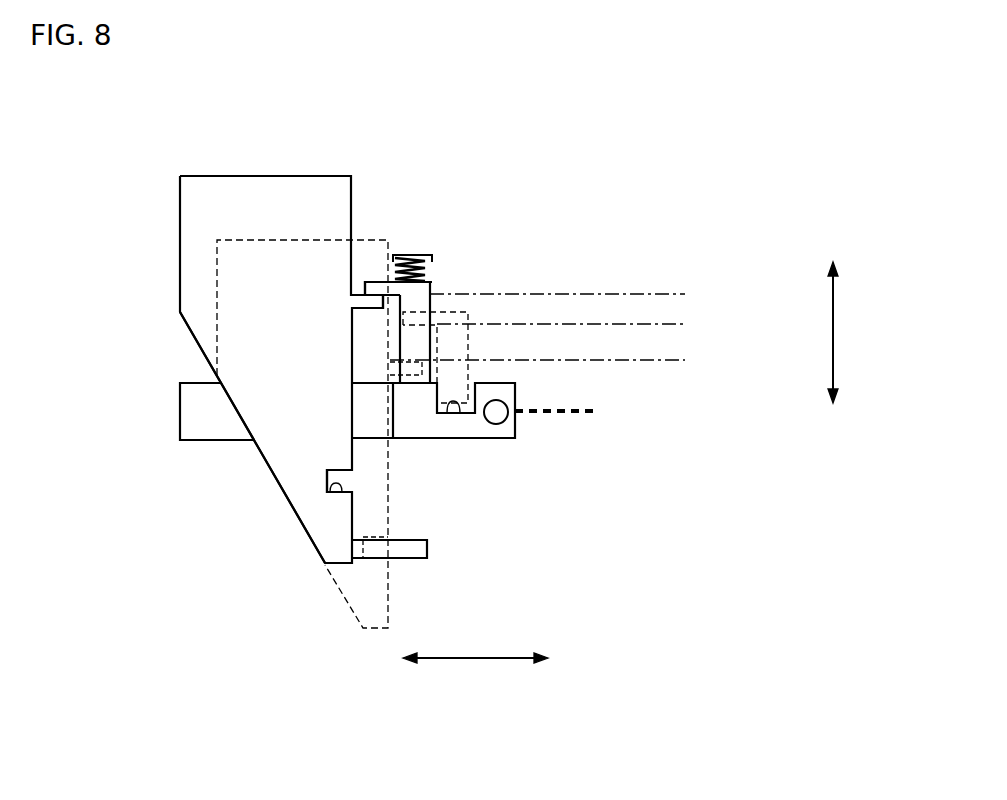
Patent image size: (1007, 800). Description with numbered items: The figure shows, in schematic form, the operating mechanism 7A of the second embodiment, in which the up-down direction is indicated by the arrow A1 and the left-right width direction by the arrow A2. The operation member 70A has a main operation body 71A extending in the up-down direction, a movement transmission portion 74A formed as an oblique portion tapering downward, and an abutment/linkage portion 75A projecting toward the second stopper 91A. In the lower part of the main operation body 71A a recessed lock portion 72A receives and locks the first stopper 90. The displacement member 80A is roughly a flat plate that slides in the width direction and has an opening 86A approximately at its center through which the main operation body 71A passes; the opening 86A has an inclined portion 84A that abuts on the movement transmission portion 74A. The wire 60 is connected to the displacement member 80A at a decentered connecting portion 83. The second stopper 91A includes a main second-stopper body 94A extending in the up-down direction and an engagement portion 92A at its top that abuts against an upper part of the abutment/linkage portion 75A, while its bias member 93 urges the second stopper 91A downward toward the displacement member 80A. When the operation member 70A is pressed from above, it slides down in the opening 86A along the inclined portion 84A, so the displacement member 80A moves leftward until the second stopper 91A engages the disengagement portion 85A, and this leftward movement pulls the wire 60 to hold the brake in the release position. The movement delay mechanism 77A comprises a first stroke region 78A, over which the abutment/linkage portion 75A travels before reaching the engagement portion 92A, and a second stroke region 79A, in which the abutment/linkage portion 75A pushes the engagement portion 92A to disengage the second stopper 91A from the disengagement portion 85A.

The operating mechanism 7A is at (443, 154).
The operation member 70A is at (272, 174).
The main operation body 71A is at (212, 216).
The lock portion 72A is at (338, 492).
The movement transmission portion 74A is at (262, 465).
The abutment/linkage portion 75A is at (372, 304).
The movement delay mechanism 77A is at (733, 294).
The first stroke region 78A is at (679, 324).
The second stroke region 79A is at (679, 294).
The displacement member 80A is at (490, 440).
The connecting portion 83 is at (508, 416).
The inclined portion 84A is at (236, 403).
The disengagement portion 85A is at (458, 413).
The opening 86A is at (370, 425).
The first stopper 90 is at (413, 553).
The second stopper 91A is at (432, 303).
The engagement portion 92A is at (378, 287).
The bias member 93 is at (433, 262).
The main second-stopper body 94A is at (418, 304).
The wire 60 is at (580, 404).
The arrow A1 is at (847, 332).
The arrow A2 is at (475, 669).